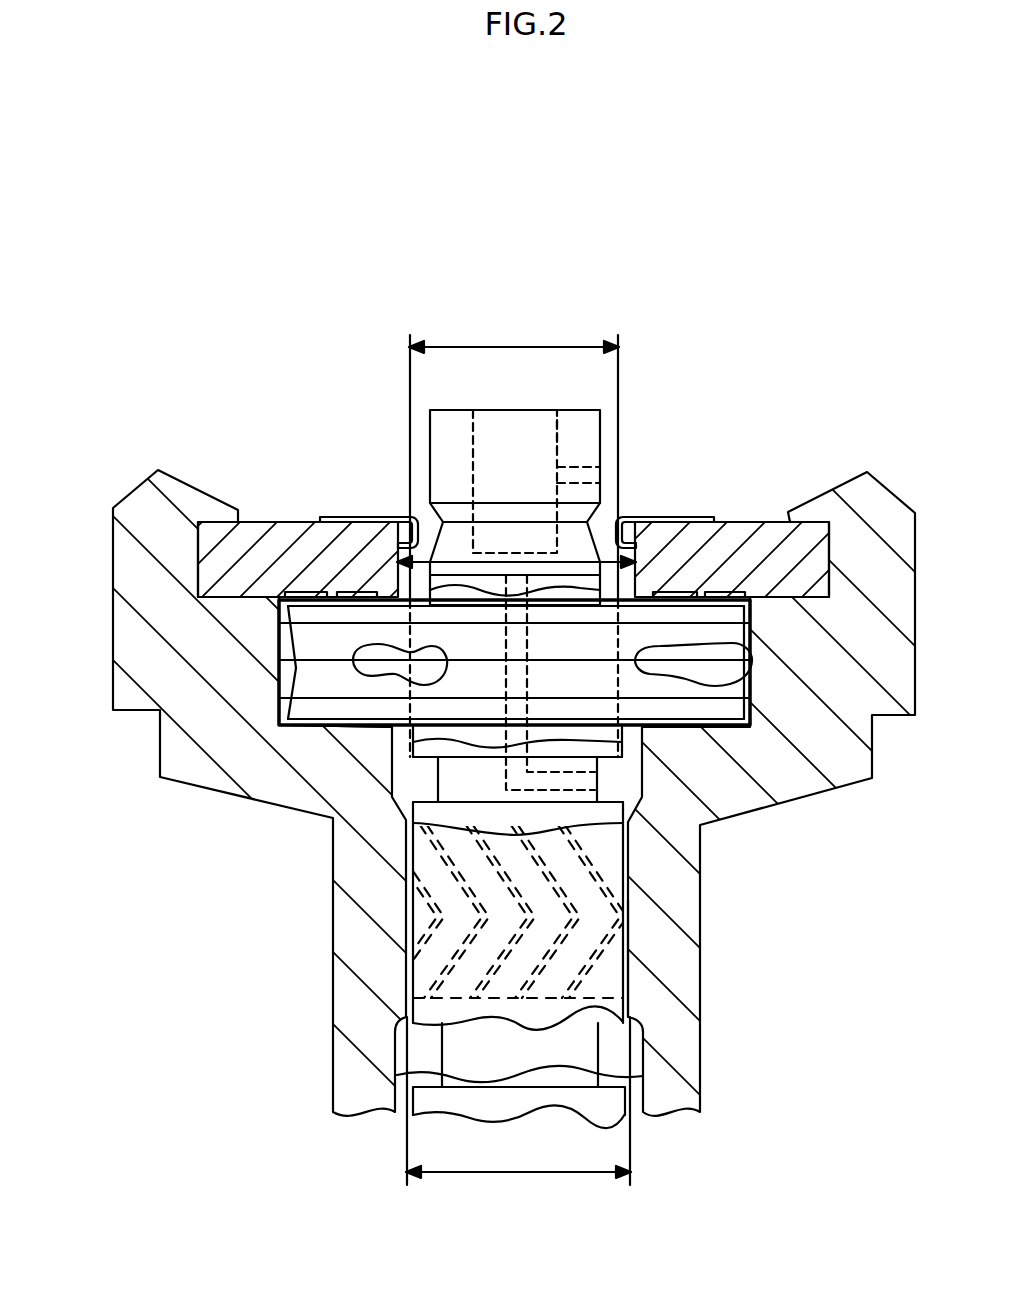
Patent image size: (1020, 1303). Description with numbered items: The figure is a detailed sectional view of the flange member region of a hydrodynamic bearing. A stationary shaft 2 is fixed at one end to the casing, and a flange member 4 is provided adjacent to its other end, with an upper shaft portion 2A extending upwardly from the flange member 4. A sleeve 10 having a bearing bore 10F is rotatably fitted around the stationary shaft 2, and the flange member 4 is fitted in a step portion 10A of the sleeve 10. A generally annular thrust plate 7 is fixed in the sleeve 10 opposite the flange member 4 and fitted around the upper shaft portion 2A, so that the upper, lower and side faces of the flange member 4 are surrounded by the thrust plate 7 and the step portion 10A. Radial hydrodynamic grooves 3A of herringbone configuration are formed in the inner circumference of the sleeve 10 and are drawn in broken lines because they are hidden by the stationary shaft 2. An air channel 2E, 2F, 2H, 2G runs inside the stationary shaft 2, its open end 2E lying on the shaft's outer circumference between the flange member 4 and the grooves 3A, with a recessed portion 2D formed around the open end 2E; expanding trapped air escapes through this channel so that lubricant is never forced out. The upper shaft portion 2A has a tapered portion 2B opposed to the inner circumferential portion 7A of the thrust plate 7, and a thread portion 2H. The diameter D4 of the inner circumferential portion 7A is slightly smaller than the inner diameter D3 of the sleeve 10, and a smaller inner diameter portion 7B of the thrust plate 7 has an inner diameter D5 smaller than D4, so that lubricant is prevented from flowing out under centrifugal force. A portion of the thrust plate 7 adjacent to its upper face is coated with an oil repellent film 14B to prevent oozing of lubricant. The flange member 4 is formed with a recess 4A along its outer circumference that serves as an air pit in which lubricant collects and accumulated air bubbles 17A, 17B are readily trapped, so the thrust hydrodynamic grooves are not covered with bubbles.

The stationary shaft 2 is at (411, 808).
The upper shaft portion 2A is at (447, 410).
The tapered portion 2B is at (590, 525).
The recessed portion 2D is at (413, 778).
The open end of the air channel 2E is at (598, 779).
The air channel 2F is at (527, 675).
The air channel 2G is at (557, 467).
The thread portion 2H is at (557, 433).
The radial hydrodynamic grooves 3A is at (633, 975).
The flange member 4 is at (298, 610).
The recess 4A is at (292, 645).
The thrust plate 7 is at (207, 543).
The inner circumferential portion 7A is at (397, 575).
The smaller inner diameter portion 7B is at (387, 580).
The sleeve 10 is at (334, 1029).
The step portion 10A is at (300, 722).
The bearing bore 10F is at (630, 933).
The oil repellent film 14B is at (378, 514).
The air bubbles 17A is at (355, 670).
The air bubbles 17B is at (752, 655).
The inner diameter of the sleeve D3 is at (518, 1101).
The diameter of the inner circumferential portion D4 is at (435, 560).
The inner diameter of the smaller inner diameter portion D5 is at (514, 534).